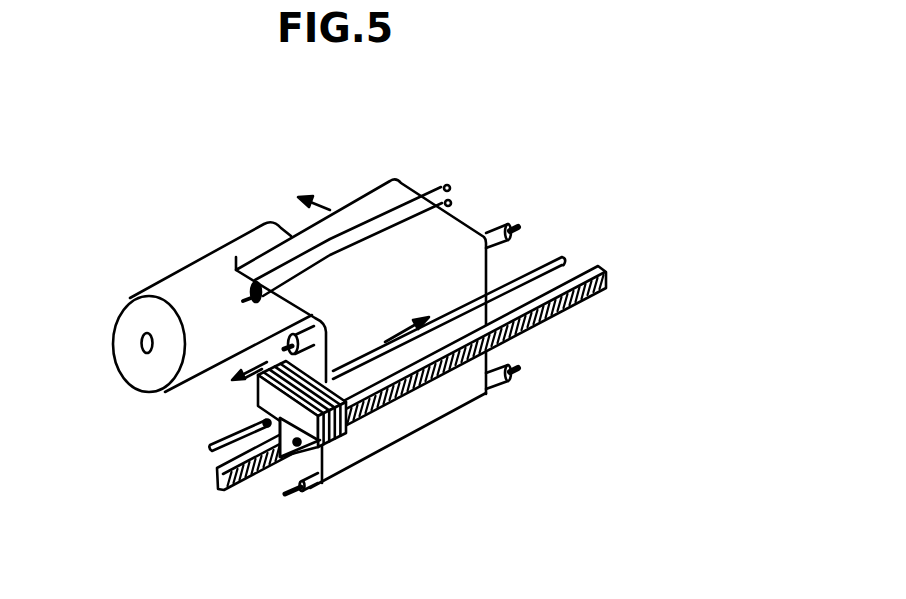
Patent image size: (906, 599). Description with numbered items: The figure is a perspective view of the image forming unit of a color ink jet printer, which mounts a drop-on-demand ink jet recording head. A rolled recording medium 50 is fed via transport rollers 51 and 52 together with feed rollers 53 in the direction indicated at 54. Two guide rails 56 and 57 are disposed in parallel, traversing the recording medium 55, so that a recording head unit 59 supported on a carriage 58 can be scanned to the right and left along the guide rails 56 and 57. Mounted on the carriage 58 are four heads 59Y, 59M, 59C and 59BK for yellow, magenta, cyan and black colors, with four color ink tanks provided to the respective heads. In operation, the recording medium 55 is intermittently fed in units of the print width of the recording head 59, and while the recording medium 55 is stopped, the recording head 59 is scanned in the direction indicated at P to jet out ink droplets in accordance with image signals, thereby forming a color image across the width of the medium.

The rolled recording medium 50 is at (229, 256).
The transport roller 51 is at (496, 388).
The transport roller 52 is at (505, 222).
The feed rollers 53 is at (431, 186).
The feed direction 54 is at (323, 210).
The recording medium 55 is at (450, 412).
The guide rail 56 is at (566, 258).
The guide rail 57 is at (580, 305).
The carriage 58 is at (213, 431).
The recording head unit 59 is at (302, 470).
The yellow head 59Y is at (342, 430).
The magenta head 59M is at (336, 434).
The cyan head 59C is at (330, 436).
The black head 59BK is at (325, 440).
The scanning direction P is at (361, 286).